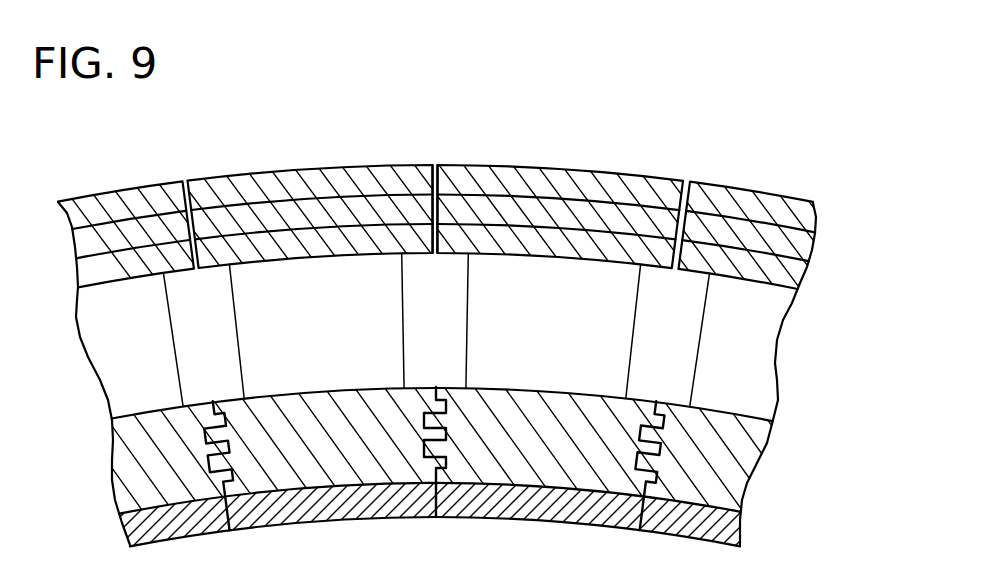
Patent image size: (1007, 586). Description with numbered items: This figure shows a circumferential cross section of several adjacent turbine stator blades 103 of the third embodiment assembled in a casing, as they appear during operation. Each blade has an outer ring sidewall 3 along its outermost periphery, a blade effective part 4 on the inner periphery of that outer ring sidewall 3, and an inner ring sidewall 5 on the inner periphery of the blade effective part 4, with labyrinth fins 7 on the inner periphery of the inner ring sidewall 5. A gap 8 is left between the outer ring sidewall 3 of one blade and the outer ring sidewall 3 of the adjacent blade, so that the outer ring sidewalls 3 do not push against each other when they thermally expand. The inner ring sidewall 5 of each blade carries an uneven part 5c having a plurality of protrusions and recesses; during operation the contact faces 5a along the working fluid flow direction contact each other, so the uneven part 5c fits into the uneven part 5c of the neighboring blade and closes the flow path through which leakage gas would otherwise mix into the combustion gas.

The turbine stator blade 103 is at (281, 151).
The outer ring sidewall 3 is at (97, 247).
The blade effective part 4 is at (113, 354).
The inner ring sidewall 5 is at (128, 477).
The contact face 5a is at (437, 468).
The uneven part 5c is at (438, 470).
The labyrinth fins 7 is at (138, 527).
The gap 8 is at (433, 165).